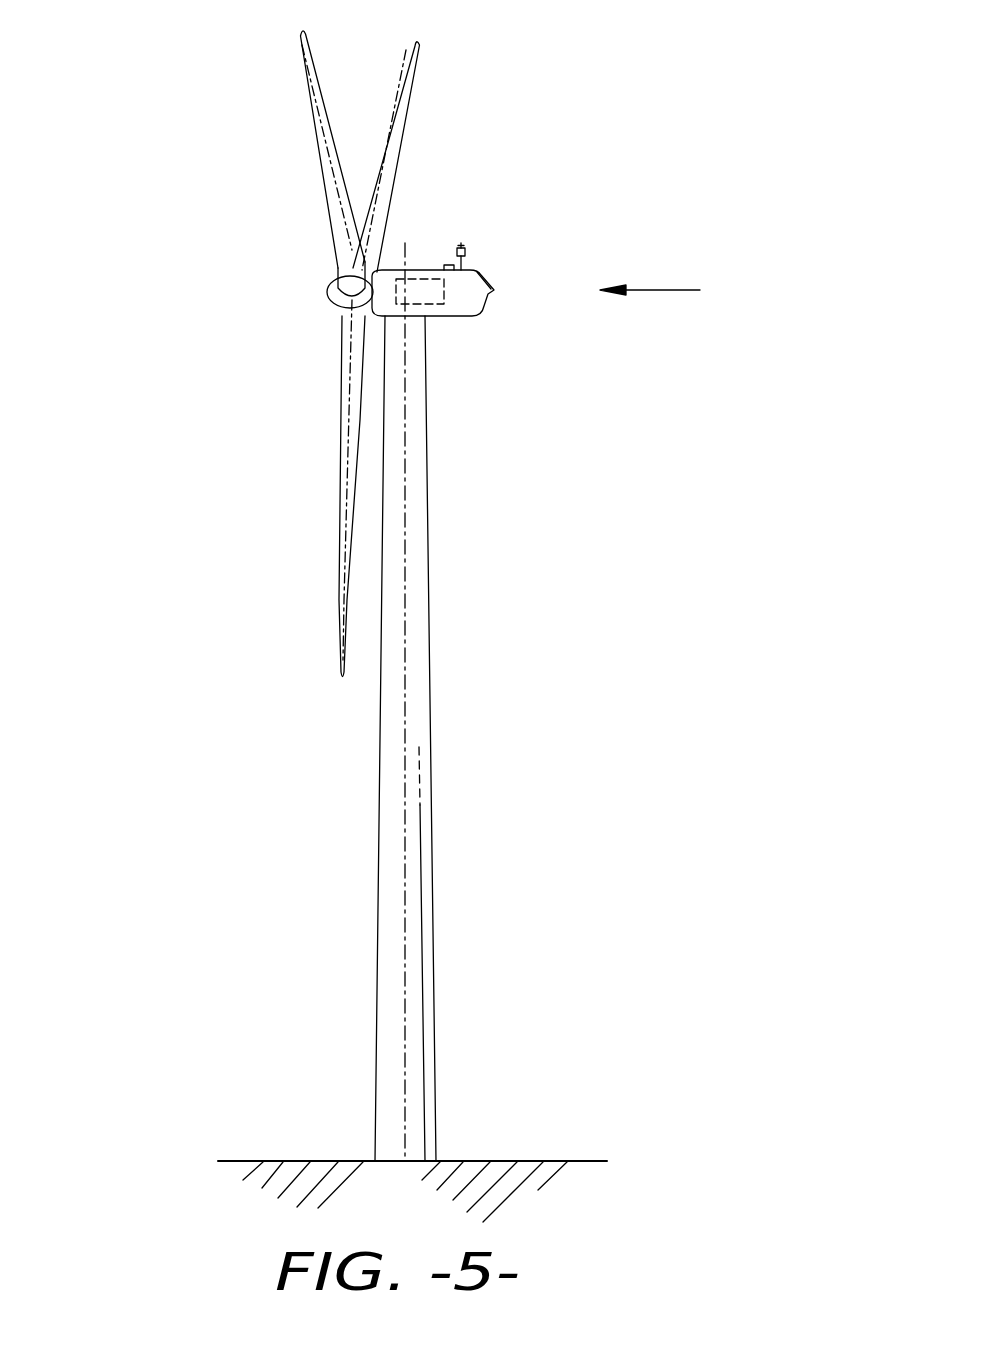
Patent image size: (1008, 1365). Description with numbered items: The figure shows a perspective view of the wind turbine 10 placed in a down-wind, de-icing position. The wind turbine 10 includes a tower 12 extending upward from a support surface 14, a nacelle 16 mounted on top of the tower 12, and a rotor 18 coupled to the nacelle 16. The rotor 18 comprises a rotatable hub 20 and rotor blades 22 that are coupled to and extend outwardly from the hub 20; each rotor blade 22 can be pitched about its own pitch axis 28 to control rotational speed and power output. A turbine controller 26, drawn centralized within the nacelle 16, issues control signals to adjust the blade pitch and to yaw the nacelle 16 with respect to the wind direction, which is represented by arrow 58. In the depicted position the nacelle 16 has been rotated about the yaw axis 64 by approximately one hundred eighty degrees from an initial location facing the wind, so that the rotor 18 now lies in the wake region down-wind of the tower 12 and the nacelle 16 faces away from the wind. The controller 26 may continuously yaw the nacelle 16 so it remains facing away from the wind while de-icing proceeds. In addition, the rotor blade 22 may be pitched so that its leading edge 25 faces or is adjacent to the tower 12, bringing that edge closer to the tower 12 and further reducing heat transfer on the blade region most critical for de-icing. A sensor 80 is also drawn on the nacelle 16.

The wind turbine 10 is at (555, 101).
The tower 12 is at (392, 853).
The support surface 14 is at (303, 1160).
The nacelle 16 is at (448, 320).
The rotor 18 is at (322, 272).
The rotatable hub 20 is at (331, 299).
The rotor blade 22 is at (315, 72).
The leading edge 25 is at (358, 455).
The turbine controller 26 is at (417, 268).
The pitch axis 28 is at (395, 170).
The wind direction 58 is at (658, 290).
The yaw axis 64 is at (406, 626).
The sensor 80 is at (466, 250).